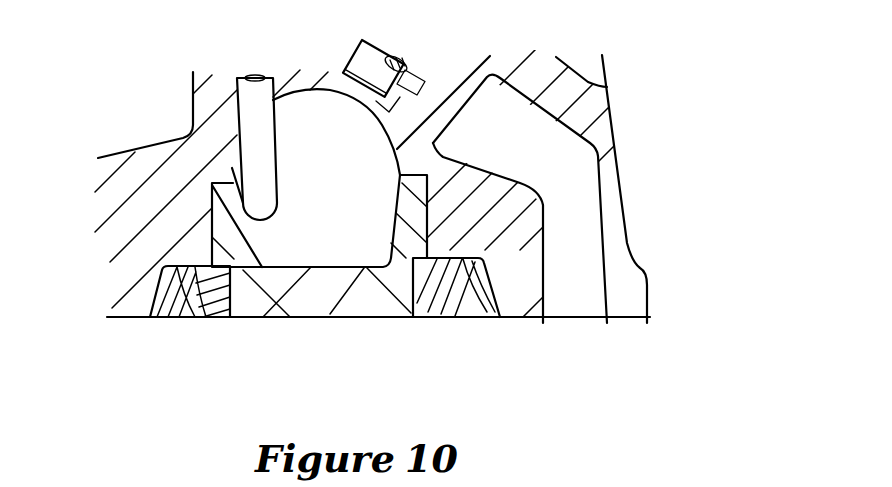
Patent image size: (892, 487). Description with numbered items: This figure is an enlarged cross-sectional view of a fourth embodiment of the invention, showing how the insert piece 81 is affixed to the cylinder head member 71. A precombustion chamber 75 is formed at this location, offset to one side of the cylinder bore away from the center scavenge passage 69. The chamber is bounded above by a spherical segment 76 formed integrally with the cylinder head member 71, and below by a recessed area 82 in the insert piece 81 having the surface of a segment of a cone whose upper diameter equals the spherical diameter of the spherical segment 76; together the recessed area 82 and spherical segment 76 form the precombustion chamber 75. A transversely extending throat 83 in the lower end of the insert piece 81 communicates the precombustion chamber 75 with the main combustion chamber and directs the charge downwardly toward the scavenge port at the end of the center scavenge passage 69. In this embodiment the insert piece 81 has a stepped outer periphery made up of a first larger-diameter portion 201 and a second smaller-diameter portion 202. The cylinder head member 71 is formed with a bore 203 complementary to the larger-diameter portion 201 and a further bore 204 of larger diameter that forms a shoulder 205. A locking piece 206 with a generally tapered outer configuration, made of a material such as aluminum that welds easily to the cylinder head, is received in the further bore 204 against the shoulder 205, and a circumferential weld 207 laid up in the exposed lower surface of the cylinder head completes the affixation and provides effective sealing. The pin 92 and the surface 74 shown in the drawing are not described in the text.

The center scavenge passage 69 is at (631, 114).
The cylinder head member 71 is at (642, 88).
The base surface 74 is at (126, 320).
The precombustion chamber 75 is at (339, 115).
The spherical segment 76 is at (400, 159).
The insert piece 81 is at (357, 322).
The recessed area 82 is at (375, 63).
The throat 83 is at (285, 319).
The pin 92 is at (243, 77).
The first larger-diameter portion 201 is at (210, 198).
The second smaller-diameter portion 202 is at (390, 253).
The bore 203 is at (247, 320).
The further bore 204 is at (483, 278).
The shoulder 205 is at (203, 319).
The locking piece 206 is at (433, 319).
The circumferential weld 207 is at (490, 319).